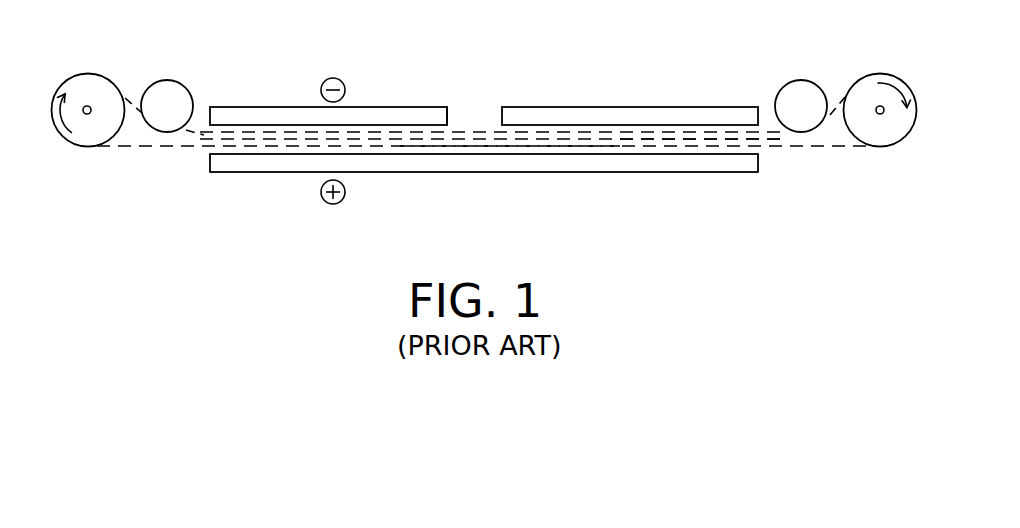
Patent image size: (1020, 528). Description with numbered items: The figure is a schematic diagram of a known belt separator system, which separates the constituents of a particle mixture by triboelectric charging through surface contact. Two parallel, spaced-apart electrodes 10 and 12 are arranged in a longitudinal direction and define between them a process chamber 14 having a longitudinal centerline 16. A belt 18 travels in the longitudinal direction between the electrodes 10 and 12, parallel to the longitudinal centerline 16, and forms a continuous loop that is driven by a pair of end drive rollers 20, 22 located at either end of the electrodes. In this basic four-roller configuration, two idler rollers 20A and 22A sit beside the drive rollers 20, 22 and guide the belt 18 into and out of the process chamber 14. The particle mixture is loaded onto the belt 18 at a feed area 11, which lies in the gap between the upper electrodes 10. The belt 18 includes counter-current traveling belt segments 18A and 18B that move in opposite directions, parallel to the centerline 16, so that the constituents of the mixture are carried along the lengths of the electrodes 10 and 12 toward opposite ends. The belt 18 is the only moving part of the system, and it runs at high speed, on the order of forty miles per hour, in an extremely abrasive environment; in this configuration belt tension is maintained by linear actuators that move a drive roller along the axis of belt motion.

The electrode 10 is at (358, 107).
The feed area 11 is at (448, 123).
The electrode 12 is at (605, 173).
The process chamber 14 is at (708, 138).
The longitudinal centerline 16 is at (553, 140).
The belt 18 is at (198, 127).
The belt segment 18A is at (482, 132).
The belt segment 18B is at (517, 147).
The drive roller 20 is at (88, 73).
The idler roller 20A is at (167, 80).
The drive roller 22 is at (878, 73).
The idler roller 22A is at (797, 80).